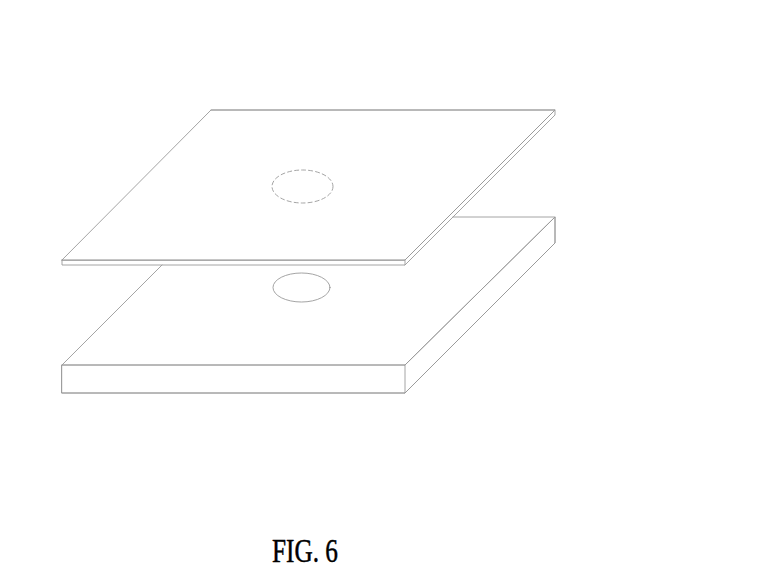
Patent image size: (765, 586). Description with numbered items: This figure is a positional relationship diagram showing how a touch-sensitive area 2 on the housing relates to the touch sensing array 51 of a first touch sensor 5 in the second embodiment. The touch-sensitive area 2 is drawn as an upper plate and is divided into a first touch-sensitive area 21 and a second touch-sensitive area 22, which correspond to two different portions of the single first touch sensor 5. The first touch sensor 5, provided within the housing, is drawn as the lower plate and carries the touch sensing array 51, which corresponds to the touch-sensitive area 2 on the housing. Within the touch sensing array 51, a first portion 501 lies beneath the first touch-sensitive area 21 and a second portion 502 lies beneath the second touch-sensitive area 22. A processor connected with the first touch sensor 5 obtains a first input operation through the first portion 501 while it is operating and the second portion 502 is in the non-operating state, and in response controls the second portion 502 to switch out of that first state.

The touch-sensitive area 2 is at (308, 132).
The first touch-sensitive area 21 is at (324, 125).
The second touch-sensitive area 22 is at (422, 132).
The first touch sensor 5 is at (308, 358).
The touch sensing array 51 is at (308, 358).
The first portion of the touch sensing array 501 is at (317, 293).
The second portion of the touch sensing array 502 is at (373, 345).